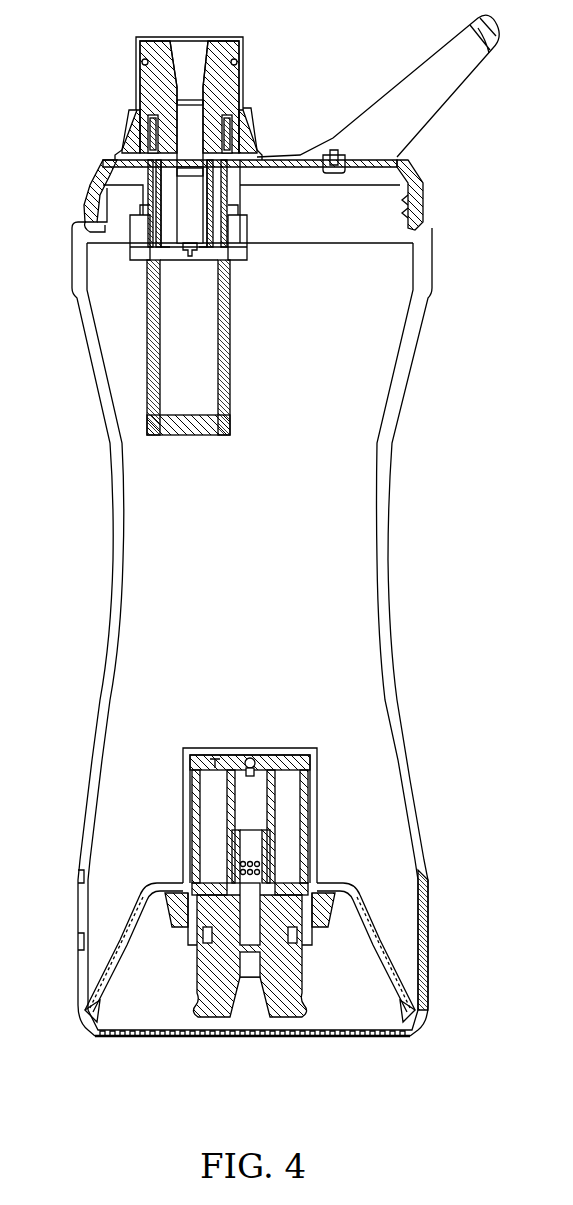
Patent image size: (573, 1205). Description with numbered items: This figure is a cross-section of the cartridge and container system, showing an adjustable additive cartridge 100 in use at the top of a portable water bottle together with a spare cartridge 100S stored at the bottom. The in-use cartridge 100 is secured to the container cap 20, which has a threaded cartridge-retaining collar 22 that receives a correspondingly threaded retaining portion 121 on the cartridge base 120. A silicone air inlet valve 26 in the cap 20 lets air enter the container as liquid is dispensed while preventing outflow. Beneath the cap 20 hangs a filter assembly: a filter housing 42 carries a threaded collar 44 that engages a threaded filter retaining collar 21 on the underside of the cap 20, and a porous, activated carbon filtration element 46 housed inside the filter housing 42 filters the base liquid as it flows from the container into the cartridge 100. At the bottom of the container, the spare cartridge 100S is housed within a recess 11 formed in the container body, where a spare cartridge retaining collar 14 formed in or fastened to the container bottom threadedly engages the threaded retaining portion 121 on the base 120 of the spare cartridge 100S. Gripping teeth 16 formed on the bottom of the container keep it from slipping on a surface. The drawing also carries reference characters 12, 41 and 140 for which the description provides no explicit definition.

The adjustable additive cartridge 100 is at (242, 63).
The nozzle insert 140 is at (227, 97).
The cartridge-retaining collar 22 is at (142, 118).
The cartridge base 120 is at (127, 140).
The collar 41 is at (143, 250).
The filter retaining collar 21 is at (230, 217).
The threaded collar 44 is at (243, 255).
The cap 20 is at (417, 170).
The silicone air inlet valve 26 is at (330, 170).
The filter housing 42 is at (230, 390).
The activated carbon filtration element 46 is at (157, 423).
The spare cartridge retaining collar 14 is at (295, 940).
The threaded retaining portion 121 is at (173, 915).
The conical base wall 12 is at (110, 970).
The recess 11 is at (133, 1012).
The spare cartridge 100S is at (293, 977).
The gripping teeth 16 is at (383, 1038).